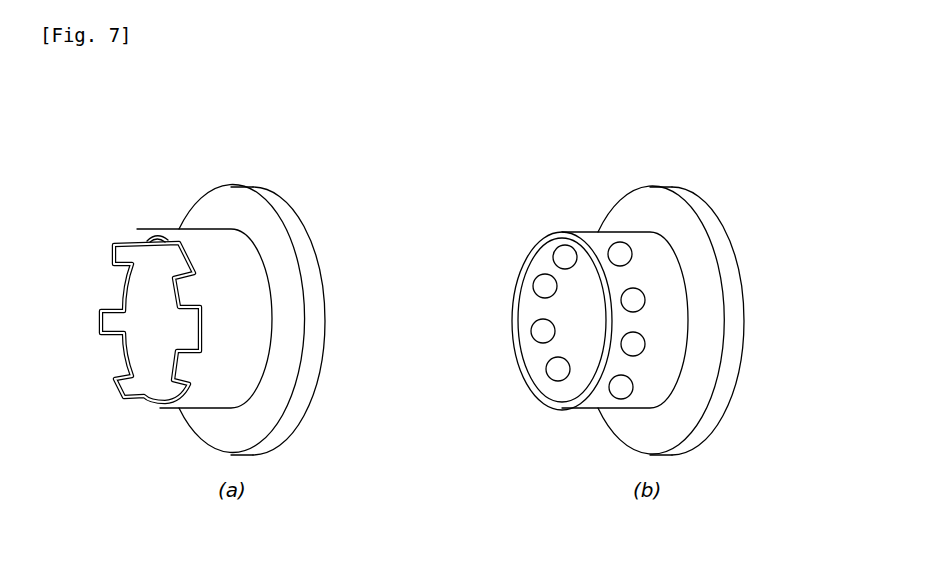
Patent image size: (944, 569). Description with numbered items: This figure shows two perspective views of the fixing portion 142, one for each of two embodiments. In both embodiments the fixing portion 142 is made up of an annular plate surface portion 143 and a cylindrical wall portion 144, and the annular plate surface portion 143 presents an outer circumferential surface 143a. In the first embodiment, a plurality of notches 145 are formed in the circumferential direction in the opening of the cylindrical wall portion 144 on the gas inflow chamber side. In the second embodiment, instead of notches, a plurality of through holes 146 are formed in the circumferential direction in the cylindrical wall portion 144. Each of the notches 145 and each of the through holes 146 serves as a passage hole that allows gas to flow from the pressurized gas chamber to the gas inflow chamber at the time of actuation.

The fixing portion 142 is at (372, 166).
The annular plate surface portion 143 is at (285, 220).
The outer circumferential surface of flange 143a is at (315, 307).
The cylindrical wall portion 144 is at (212, 258).
The notches 145 is at (122, 375).
The through holes 146 is at (553, 369).